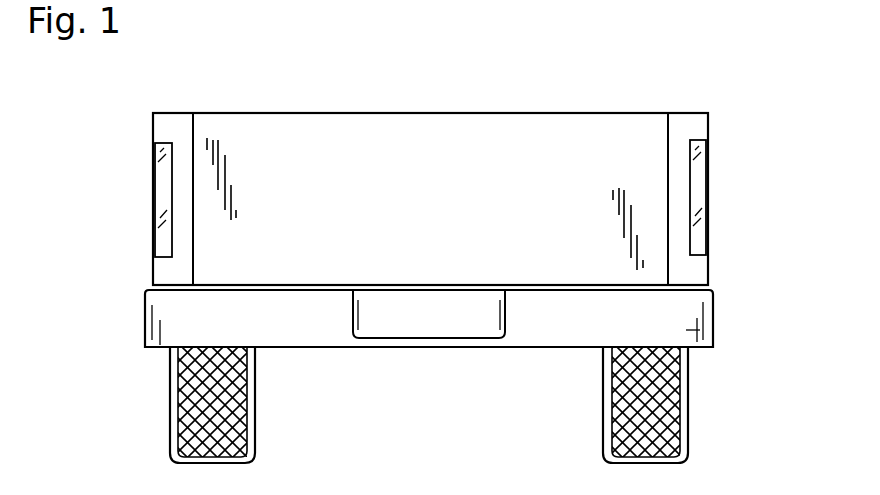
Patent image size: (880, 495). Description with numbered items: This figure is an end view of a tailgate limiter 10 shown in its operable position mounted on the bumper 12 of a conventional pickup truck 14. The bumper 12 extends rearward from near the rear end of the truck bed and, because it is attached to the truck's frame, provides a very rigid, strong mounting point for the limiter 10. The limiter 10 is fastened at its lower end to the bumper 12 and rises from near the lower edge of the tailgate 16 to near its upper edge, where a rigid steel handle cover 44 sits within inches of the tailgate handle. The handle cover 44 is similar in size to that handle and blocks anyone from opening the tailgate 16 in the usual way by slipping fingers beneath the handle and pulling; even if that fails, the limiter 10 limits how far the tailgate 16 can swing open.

The tailgate limiter 10 is at (473, 228).
The bumper 12 is at (687, 330).
The pickup truck 14 is at (742, 186).
The tailgate 16 is at (628, 132).
The handle cover 44 is at (408, 140).